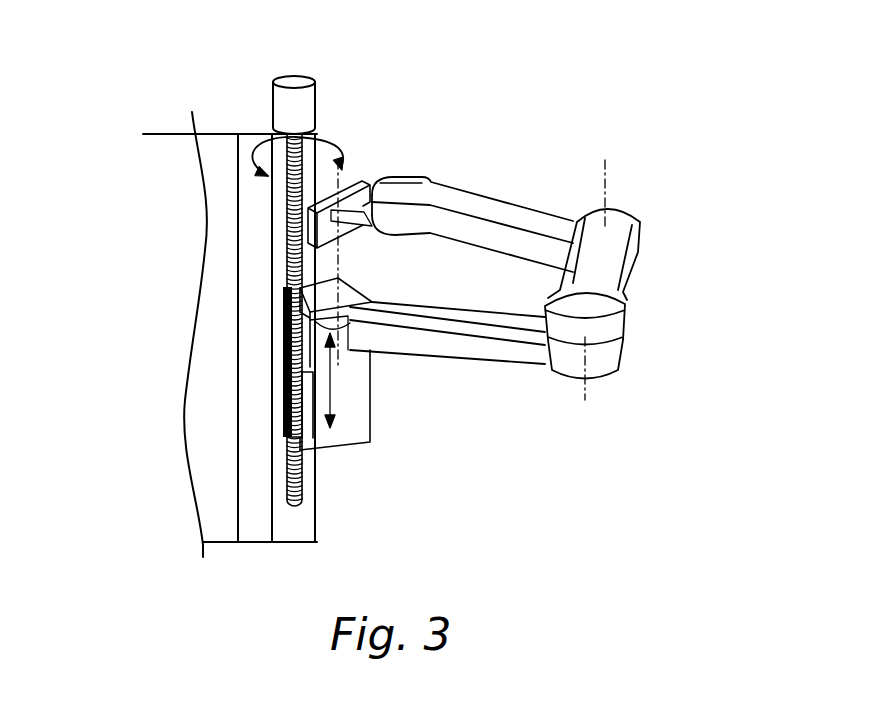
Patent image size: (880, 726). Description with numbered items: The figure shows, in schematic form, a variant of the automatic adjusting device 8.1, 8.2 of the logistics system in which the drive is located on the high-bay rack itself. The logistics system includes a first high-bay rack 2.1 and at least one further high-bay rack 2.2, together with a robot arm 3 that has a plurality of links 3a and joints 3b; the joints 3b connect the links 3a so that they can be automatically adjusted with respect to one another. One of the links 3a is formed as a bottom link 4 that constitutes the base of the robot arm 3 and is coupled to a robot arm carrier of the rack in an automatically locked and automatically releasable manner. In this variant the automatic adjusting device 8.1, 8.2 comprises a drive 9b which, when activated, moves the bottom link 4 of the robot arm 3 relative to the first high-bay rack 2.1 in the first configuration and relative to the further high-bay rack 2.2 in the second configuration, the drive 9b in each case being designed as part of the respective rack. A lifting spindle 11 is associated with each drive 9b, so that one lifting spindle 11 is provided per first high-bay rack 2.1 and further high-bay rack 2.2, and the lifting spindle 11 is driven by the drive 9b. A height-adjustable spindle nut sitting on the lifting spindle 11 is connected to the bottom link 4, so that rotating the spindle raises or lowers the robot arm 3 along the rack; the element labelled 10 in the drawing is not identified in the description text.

The first high-bay rack 2.1 is at (186, 305).
The further high-bay rack 2.2 is at (210, 134).
The robot arm 3 is at (656, 219).
The links 3a is at (500, 206).
The joints 3b is at (339, 160).
The bottom link 4 is at (346, 297).
The automatic adjusting device 8.1 is at (380, 362).
The automatic adjusting device 8.2 is at (326, 480).
The drive 9b is at (283, 110).
The spindle nut carriage 10 is at (287, 478).
The lifting spindle 11 is at (305, 417).